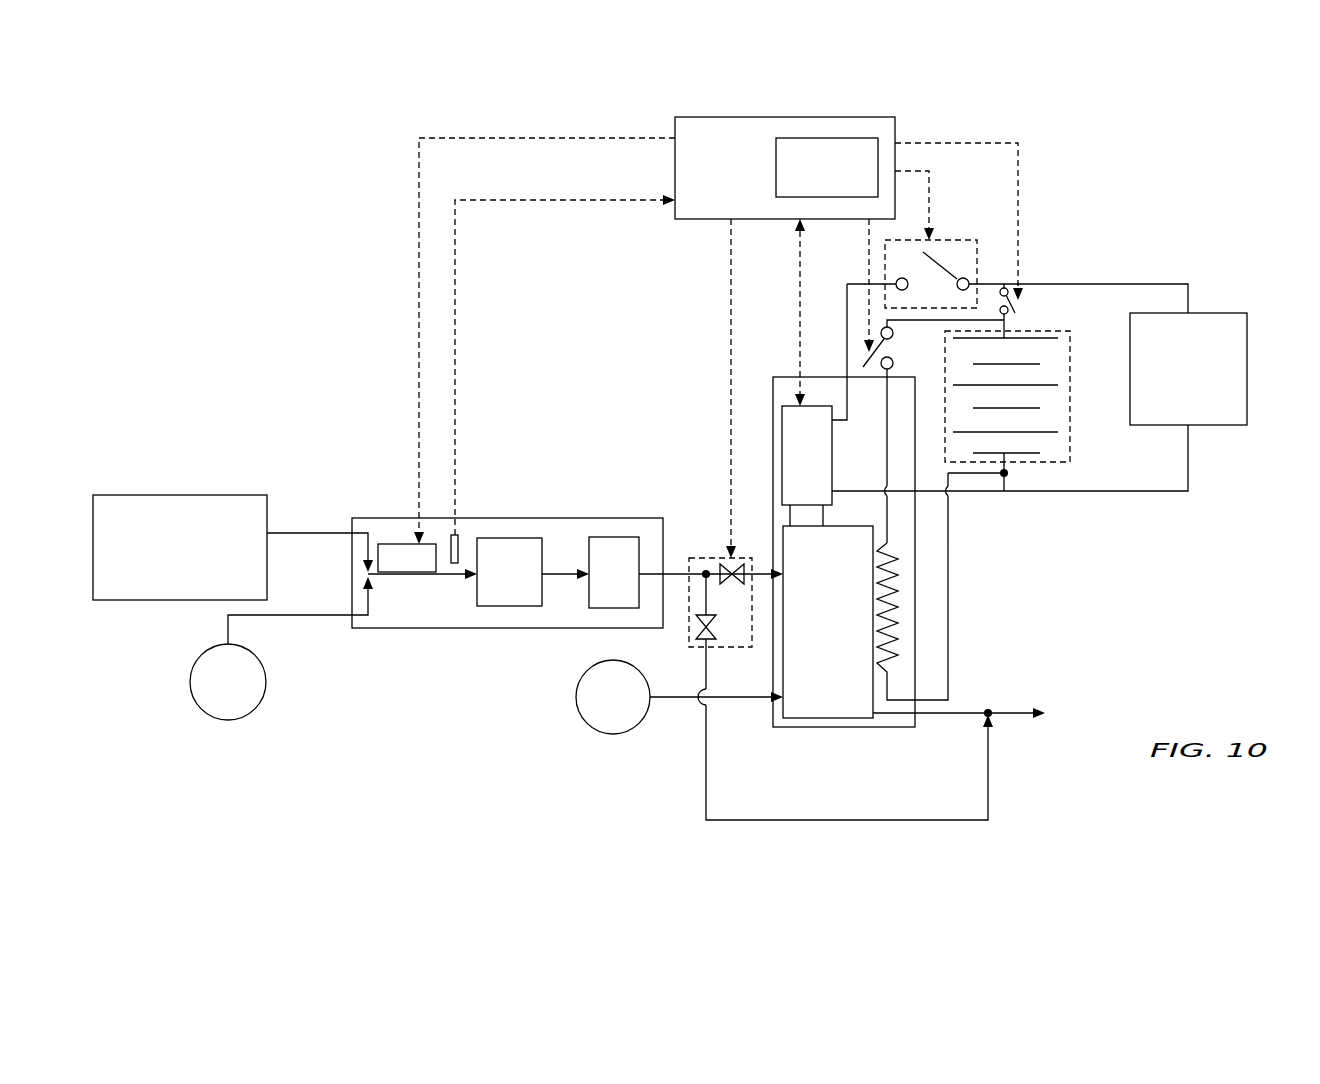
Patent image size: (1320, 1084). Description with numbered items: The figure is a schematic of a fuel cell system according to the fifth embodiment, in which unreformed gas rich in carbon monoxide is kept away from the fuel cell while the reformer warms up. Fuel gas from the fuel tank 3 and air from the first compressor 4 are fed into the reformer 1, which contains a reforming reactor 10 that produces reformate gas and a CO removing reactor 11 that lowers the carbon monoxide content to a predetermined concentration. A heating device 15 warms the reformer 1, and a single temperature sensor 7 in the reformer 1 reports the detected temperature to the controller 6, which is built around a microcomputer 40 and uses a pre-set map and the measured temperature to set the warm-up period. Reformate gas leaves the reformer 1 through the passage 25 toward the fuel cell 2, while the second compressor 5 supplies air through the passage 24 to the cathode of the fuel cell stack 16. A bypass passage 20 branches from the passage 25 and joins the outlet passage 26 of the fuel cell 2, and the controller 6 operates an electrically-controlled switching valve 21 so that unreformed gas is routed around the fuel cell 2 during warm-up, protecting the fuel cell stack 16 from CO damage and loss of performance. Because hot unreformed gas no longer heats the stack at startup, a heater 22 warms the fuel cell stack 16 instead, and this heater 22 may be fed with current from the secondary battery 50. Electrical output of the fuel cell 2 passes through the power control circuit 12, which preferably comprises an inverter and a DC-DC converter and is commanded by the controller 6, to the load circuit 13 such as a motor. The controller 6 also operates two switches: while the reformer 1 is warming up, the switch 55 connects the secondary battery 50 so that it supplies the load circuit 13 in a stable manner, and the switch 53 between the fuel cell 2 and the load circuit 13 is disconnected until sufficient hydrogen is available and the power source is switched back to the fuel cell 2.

The reformer 1 is at (397, 608).
The fuel cell 2 is at (898, 723).
The fuel tank 3 is at (162, 495).
The first compressor 4 is at (240, 717).
The second compressor 5 is at (597, 730).
The controller 6 is at (867, 120).
The temperature sensor 7 is at (461, 553).
The reforming reactor 10 is at (490, 595).
The CO removing reactor 11 is at (620, 543).
The power control circuit 12 is at (820, 413).
The load circuit 13 is at (1213, 322).
The heating device 15 is at (392, 552).
The fuel cell stack 16 is at (803, 712).
The bypass passage 20 is at (827, 820).
The electrically-controlled switching valve 21 is at (688, 645).
The heater 22 is at (893, 607).
The passage 24 is at (672, 700).
The passage 25 is at (683, 567).
The outlet passage 26 is at (1008, 715).
The microcomputer 40 is at (848, 145).
The secondary battery 50 is at (1072, 405).
The switch 53 is at (965, 250).
The switch 55 is at (1022, 300).